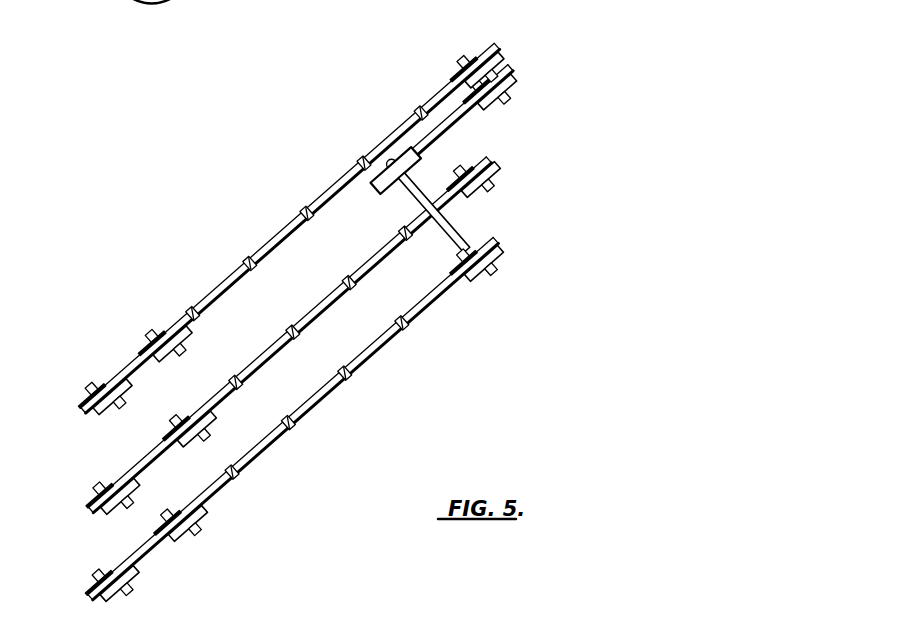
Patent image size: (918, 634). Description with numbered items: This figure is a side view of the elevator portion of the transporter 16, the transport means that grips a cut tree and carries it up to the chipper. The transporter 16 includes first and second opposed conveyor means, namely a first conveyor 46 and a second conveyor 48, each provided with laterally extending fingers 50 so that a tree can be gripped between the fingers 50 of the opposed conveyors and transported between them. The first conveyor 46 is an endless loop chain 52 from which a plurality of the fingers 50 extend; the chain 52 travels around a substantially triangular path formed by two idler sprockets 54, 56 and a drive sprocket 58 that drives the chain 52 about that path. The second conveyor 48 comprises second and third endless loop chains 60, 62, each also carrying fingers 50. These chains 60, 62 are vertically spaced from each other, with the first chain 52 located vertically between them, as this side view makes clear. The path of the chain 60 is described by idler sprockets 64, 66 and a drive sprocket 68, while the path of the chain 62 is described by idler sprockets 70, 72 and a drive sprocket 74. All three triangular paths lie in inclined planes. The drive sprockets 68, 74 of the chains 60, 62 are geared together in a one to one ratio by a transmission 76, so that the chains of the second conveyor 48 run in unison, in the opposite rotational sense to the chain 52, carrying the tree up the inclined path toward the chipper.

The transporter 16 is at (317, 307).
The first conveyor 46 is at (508, 140).
The second conveyor 48 is at (521, 82).
The fingers 50 is at (305, 214).
The endless loop chain 52 is at (318, 310).
The idler sprocket 54 is at (88, 503).
The idler sprocket 56 is at (202, 422).
The drive sprocket 58 is at (490, 163).
The second endless loop chain 60 is at (232, 282).
The third endless loop chain 62 is at (337, 376).
The idler sprocket 64 is at (80, 405).
The idler sprocket 66 is at (148, 347).
The drive sprocket 68 is at (483, 44).
The idler sprocket 70 is at (185, 525).
The idler sprocket 72 is at (90, 585).
The drive sprocket 74 is at (492, 247).
The transmission 76 is at (450, 213).